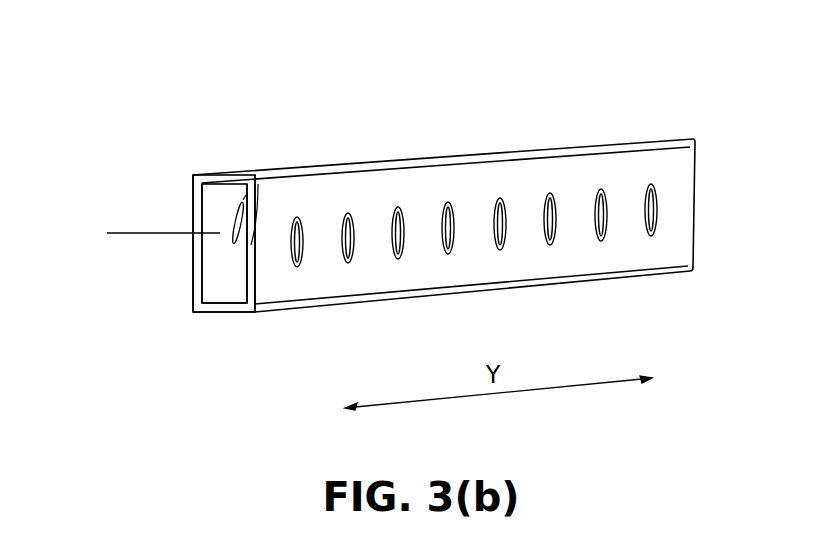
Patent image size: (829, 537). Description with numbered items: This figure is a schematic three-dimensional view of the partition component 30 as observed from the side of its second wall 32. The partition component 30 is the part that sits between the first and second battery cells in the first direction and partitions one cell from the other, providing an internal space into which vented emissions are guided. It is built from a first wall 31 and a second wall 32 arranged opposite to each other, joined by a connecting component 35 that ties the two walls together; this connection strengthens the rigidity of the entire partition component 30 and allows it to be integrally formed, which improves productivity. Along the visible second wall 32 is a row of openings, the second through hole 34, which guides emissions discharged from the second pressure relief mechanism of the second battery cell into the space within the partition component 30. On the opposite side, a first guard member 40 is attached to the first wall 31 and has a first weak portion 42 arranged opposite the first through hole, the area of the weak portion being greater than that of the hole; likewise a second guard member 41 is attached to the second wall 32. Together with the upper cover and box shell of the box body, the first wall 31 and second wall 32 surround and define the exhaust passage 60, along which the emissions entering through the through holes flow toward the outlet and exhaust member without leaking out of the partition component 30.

The partition component 30 is at (128, 97).
The first wall 31 is at (195, 203).
The second wall 32 is at (281, 217).
The second through hole 34 is at (296, 252).
The connecting component 35 is at (228, 178).
The first guard member 40 is at (196, 305).
The second guard member 41 is at (248, 303).
The first weak portion 42 is at (238, 247).
The exhaust passage 60 is at (161, 219).